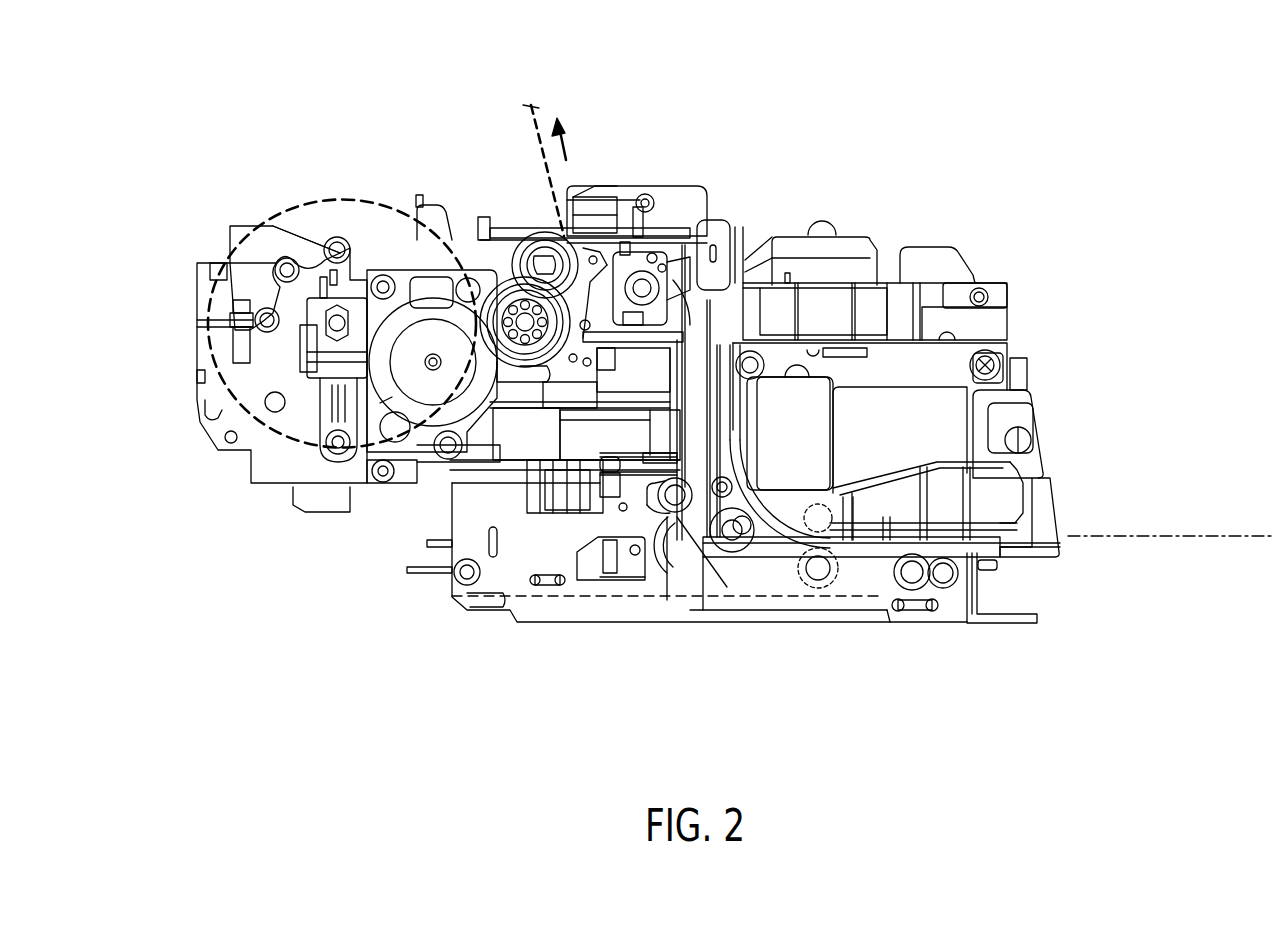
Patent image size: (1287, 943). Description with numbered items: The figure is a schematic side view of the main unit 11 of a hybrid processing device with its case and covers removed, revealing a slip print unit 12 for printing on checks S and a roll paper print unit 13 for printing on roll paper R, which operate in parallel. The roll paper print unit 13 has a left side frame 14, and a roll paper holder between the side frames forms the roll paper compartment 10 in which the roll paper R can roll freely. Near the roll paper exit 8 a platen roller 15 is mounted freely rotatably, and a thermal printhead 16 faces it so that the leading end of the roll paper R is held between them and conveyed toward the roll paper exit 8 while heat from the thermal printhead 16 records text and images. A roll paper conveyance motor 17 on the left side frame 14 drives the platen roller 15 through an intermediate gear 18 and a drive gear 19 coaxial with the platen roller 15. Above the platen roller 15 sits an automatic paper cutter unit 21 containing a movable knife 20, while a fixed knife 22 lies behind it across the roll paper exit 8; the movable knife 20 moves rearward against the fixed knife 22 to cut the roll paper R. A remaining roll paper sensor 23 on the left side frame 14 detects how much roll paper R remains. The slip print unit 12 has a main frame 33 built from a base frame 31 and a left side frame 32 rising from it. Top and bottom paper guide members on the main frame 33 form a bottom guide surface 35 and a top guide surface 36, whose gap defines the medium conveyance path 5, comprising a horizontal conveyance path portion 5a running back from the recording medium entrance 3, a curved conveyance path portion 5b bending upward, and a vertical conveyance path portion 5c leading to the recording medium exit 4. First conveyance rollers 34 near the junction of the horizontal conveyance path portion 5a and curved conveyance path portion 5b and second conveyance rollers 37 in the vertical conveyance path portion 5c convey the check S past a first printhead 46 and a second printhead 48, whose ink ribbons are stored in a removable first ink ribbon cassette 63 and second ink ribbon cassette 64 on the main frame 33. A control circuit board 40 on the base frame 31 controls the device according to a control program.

The recording medium entrance 3 is at (1080, 518).
The recording medium exit 4 is at (752, 218).
The medium conveyance path 5 is at (865, 700).
The horizontal conveyance path portion 5a is at (1010, 467).
The curved conveyance path portion 5b is at (773, 540).
The vertical conveyance path portion 5c is at (735, 553).
The roll paper exit 8 is at (566, 200).
The roll paper compartment 10 is at (262, 218).
The main unit 11 is at (808, 43).
The slip print unit 12 is at (808, 180).
The roll paper print unit 13 is at (679, 133).
The left side frame 14 is at (265, 465).
The platen roller 15 is at (548, 235).
The thermal printhead 16 is at (607, 213).
The roll paper conveyance motor 17 is at (392, 397).
The intermediate gear 18 is at (447, 240).
The drive gear 19 is at (530, 285).
The movable knife 20 is at (593, 233).
The automatic paper cutter unit 21 is at (633, 187).
The fixed knife 22 is at (500, 228).
The remaining roll paper sensor 23 is at (333, 405).
The base frame 31 is at (647, 622).
The left side frame 32 is at (512, 622).
The main frame 33 is at (455, 597).
The first conveyance rollers 34 is at (833, 590).
The bottom guide surface 35 is at (945, 588).
The top guide surface 36 is at (940, 533).
The second conveyance rollers 37 is at (745, 220).
The control circuit board 40 is at (585, 622).
The first printhead 46 is at (713, 420).
The second printhead 48 is at (858, 236).
The first ink ribbon cassette 63 is at (533, 440).
The second ink ribbon cassette 64 is at (930, 247).
The roll paper R is at (225, 230).
The check S is at (1195, 535).